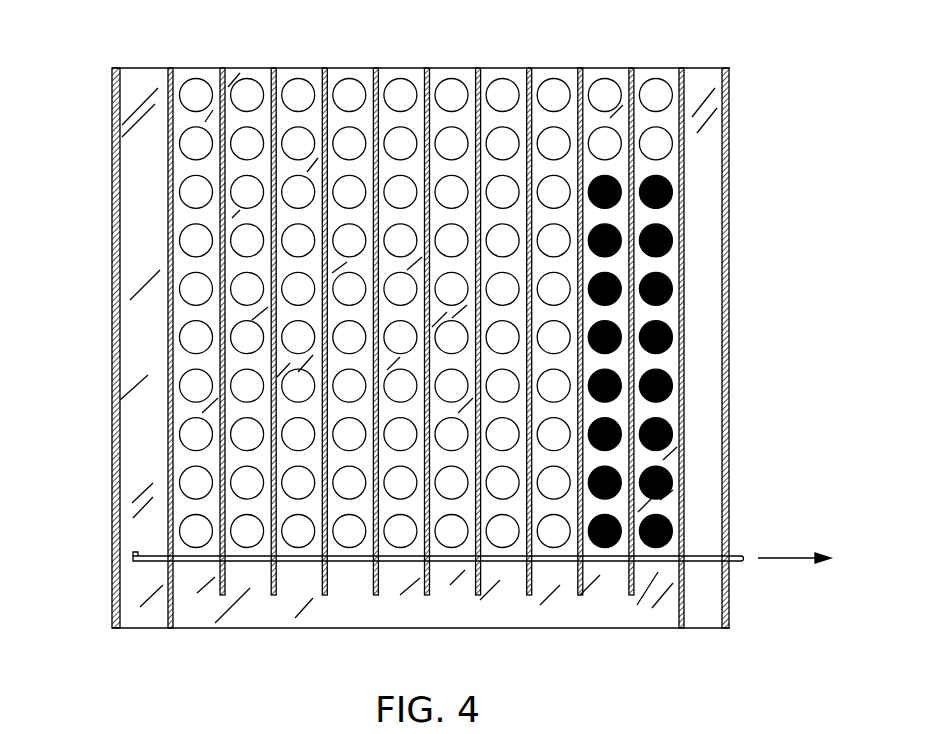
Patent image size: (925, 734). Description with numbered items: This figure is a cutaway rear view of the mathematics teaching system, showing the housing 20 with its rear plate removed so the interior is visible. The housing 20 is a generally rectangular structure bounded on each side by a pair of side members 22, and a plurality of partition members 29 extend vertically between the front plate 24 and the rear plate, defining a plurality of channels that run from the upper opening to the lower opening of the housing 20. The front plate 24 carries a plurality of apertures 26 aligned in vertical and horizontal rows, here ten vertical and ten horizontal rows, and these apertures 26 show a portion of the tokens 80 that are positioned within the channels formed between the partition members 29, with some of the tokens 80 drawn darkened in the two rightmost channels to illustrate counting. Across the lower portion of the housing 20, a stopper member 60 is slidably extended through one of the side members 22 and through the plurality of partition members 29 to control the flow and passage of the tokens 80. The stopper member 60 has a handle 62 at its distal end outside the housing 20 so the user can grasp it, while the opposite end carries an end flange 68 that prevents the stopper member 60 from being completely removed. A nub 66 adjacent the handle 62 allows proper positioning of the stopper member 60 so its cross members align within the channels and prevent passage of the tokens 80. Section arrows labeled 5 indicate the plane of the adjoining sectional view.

The housing 20 is at (742, 183).
The side members 22 is at (728, 245).
The front plate 24 is at (588, 68).
The apertures 26 is at (608, 77).
The partition members 29 is at (480, 68).
The section line 5 is at (105, 357).
The stopper member 60 is at (742, 577).
The handle 62 is at (745, 556).
The nub 66 is at (688, 556).
The end flange 68 is at (134, 552).
The tokens 80 is at (670, 522).